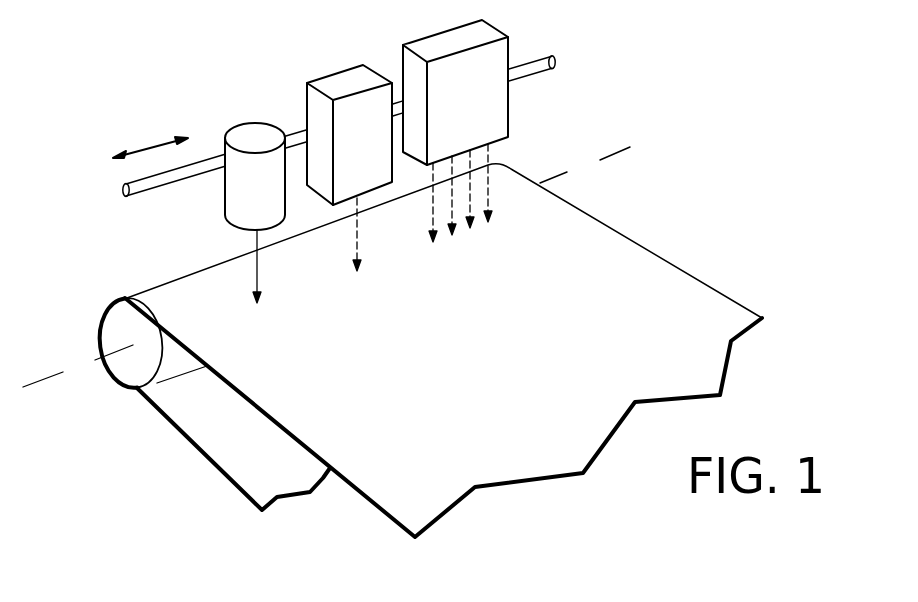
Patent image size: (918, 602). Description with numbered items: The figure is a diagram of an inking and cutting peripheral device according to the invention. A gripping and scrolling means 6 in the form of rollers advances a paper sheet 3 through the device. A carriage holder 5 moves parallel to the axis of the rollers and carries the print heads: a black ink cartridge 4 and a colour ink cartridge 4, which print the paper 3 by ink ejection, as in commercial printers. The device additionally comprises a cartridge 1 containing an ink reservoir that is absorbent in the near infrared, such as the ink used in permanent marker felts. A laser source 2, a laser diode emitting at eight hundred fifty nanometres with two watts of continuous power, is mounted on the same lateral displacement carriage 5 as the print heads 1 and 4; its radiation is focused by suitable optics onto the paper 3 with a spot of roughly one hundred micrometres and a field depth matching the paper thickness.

The cartridge 1 is at (346, 86).
The laser source 2 is at (243, 135).
The paper sheet 3 is at (625, 262).
The ink cartridge 4 is at (487, 33).
The carriage holder 5 is at (528, 68).
The gripping and scrolling means 6 is at (138, 370).